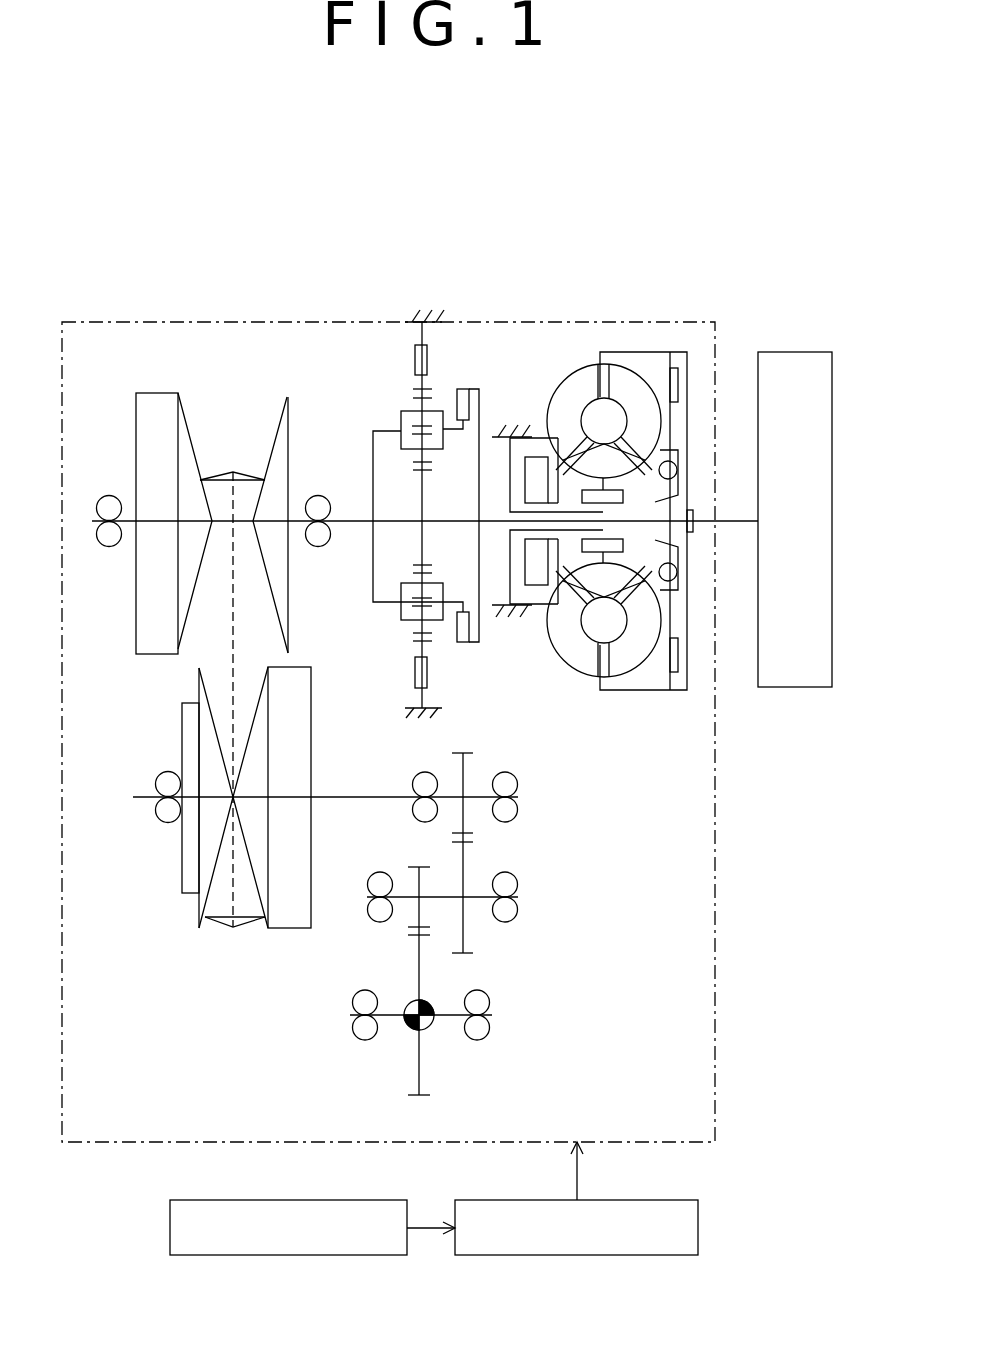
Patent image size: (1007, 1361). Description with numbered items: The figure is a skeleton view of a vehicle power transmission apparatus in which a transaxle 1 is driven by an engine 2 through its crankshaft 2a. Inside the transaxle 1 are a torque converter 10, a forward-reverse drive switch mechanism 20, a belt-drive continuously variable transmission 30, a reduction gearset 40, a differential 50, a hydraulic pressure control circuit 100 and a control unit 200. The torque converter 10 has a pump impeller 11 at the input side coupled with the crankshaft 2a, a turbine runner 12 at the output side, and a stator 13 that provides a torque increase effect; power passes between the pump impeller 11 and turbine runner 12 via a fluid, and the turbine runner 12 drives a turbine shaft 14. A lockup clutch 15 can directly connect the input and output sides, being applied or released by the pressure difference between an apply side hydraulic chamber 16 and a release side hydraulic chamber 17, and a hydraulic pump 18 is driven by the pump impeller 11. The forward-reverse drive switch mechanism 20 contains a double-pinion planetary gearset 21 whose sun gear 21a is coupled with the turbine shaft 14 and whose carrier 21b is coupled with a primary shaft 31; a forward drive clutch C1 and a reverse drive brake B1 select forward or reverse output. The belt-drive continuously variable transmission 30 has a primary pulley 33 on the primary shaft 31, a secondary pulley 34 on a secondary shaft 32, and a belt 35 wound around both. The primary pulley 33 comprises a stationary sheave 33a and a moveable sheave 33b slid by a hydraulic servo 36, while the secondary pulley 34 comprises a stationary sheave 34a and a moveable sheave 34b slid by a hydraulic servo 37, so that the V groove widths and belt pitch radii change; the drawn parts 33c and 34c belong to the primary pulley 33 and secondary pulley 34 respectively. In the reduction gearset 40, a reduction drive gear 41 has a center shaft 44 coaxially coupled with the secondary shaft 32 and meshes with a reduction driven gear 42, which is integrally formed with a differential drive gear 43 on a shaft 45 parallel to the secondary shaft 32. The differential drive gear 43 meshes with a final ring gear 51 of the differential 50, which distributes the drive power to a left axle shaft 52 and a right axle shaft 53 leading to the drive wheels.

The transaxle 1 is at (682, 312).
The engine 2 is at (798, 351).
The crankshaft 2a is at (738, 525).
The torque converter 10 is at (636, 504).
The pump impeller 11 is at (572, 378).
The turbine runner 12 is at (633, 385).
The stator 13 is at (557, 652).
The turbine shaft 14 is at (632, 523).
The lockup clutch 15 is at (680, 663).
The apply side hydraulic chamber 16 is at (653, 680).
The release side hydraulic chamber 17 is at (675, 622).
The hydraulic pump 18 is at (540, 458).
The forward-reverse drive switch mechanism 20 is at (411, 437).
The double-pinion planetary gearset 21 is at (385, 429).
The sun gear 21a is at (422, 490).
The carrier 21b is at (373, 431).
The reverse drive brake B1 is at (412, 344).
The forward drive clutch C1 is at (462, 388).
The belt-drive continuously variable transmission 30 is at (259, 657).
The primary shaft 31 is at (345, 520).
The secondary shaft 32 is at (382, 793).
The primary pulley 33 is at (174, 491).
The stationary sheave 33a is at (283, 437).
The moveable sheave 33b is at (183, 438).
The primary hydraulic cylinder 33c is at (150, 590).
The secondary pulley 34 is at (220, 792).
The stationary sheave 34a is at (203, 873).
The moveable sheave 34b is at (257, 917).
The fixed sheave of secondary pulley 34c is at (305, 685).
The belt 35 is at (232, 633).
The hydraulic servo 36 is at (132, 427).
The hydraulic servo 37 is at (345, 707).
The reduction gearset 40 is at (488, 836).
The reduction drive gear 41 is at (463, 778).
The reduction driven gear 42 is at (463, 878).
The differential drive gear 43 is at (418, 883).
The center shaft 44 is at (447, 797).
The shaft 45 is at (477, 897).
The differential 50 is at (434, 987).
The final ring gear 51 is at (418, 967).
The left axle shaft 52 is at (392, 1018).
The right axle shaft 53 is at (452, 1013).
The hydraulic pressure control circuit 100 is at (578, 1255).
The control unit 200 is at (287, 1255).